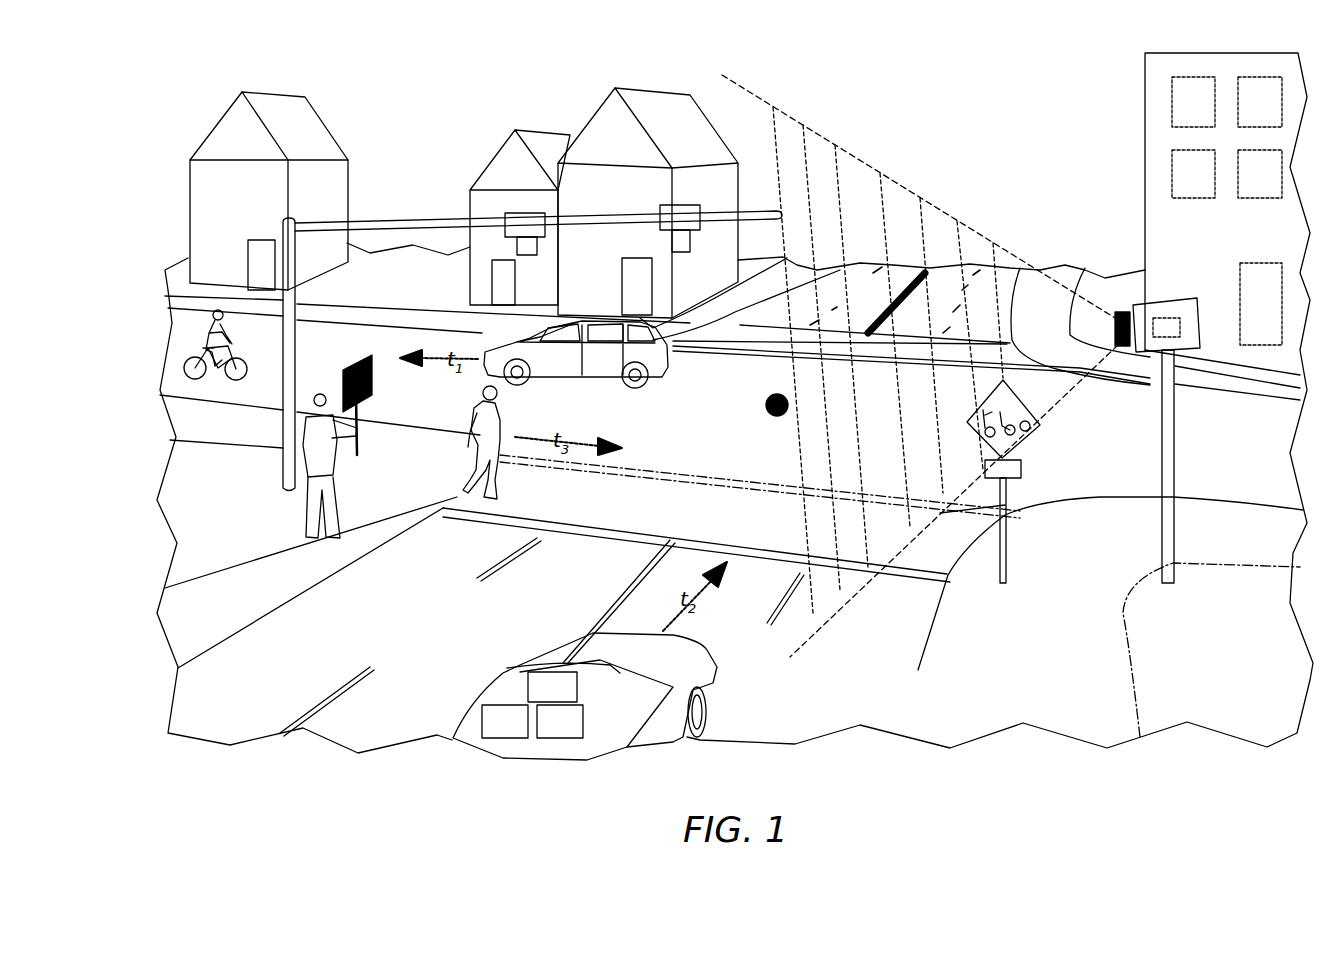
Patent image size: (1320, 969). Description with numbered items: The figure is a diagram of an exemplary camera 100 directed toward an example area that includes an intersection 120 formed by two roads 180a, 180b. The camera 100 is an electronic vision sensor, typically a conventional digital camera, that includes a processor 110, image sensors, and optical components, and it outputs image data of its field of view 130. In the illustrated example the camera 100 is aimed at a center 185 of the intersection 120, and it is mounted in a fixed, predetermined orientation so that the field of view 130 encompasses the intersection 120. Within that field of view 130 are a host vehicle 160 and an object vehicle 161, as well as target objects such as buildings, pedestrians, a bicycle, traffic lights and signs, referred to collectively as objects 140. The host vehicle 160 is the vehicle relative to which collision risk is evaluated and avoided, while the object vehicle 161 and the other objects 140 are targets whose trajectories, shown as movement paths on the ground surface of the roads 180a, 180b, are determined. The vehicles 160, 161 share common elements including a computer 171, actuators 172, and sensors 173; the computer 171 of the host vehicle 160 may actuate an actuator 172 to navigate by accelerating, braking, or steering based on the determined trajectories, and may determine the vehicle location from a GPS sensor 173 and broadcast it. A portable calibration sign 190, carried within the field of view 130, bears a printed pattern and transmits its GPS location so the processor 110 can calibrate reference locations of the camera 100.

The camera 100 is at (1160, 300).
The processor 110 is at (1185, 322).
The intersection 120 is at (975, 42).
The field of view 130 is at (818, 160).
The objects 140 is at (620, 85).
The host vehicle 160 is at (585, 696).
The object vehicle 161 is at (668, 372).
The computer 171 is at (552, 687).
The actuators 172 is at (505, 721).
The sensors 173 is at (560, 721).
The road 180a is at (881, 303).
The road 180b is at (1211, 543).
The center 185 is at (772, 416).
The calibration sign 190 is at (360, 396).